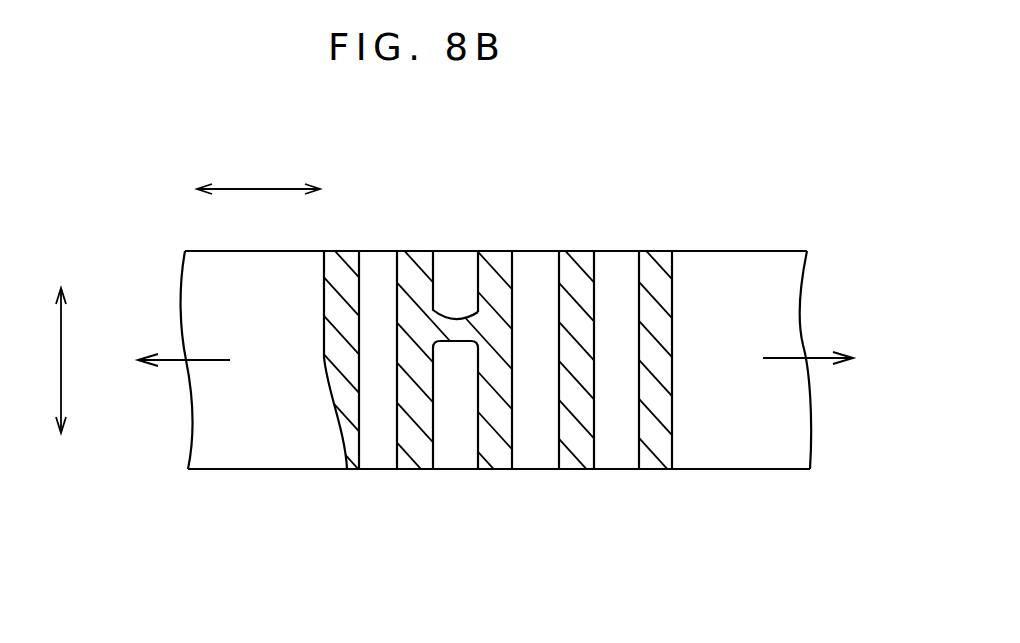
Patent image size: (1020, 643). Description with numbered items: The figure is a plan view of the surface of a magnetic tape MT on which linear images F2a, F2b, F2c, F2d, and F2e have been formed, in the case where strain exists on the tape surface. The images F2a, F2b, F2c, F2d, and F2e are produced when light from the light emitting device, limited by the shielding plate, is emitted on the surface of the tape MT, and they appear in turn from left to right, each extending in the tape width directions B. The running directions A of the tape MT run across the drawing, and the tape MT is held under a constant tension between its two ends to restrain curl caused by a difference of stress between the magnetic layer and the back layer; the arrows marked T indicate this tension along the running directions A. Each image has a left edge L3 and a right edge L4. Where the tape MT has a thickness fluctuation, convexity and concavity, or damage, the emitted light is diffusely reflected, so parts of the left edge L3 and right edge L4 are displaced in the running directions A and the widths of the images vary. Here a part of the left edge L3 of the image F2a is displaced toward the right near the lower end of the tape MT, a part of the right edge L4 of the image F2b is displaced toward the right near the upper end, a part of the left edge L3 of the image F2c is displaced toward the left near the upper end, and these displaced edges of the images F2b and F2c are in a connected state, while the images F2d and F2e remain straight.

The tape MT is at (645, 203).
The image F2a is at (353, 470).
The image F2b is at (412, 460).
The image F2c is at (493, 463).
The image F2d is at (572, 458).
The image F2e is at (652, 462).
The left edge L3 is at (397, 310).
The right edge L4 is at (430, 310).
The running directions A is at (258, 170).
The tape width directions B is at (44, 360).
The tape running direction T is at (496, 360).